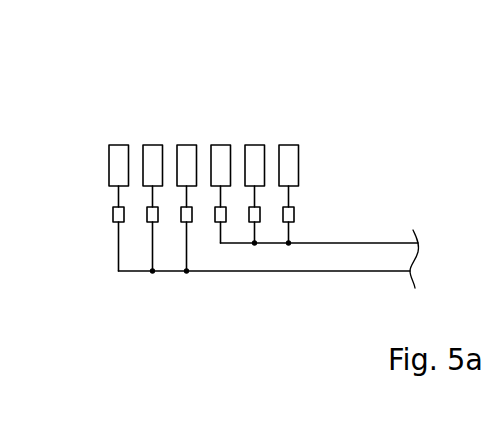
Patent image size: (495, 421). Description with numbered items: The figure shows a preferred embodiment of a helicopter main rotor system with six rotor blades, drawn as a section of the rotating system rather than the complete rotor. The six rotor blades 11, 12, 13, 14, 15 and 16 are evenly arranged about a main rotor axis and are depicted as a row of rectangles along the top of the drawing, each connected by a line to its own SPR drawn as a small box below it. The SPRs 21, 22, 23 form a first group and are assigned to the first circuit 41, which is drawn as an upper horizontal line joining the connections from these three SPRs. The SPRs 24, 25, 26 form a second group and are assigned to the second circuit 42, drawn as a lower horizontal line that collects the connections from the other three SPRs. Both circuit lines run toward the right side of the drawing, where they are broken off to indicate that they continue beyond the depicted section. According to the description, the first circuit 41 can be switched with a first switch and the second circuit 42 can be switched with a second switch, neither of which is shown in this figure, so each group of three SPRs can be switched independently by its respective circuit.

The rotor blade 11 is at (290, 144).
The rotor blade 12 is at (255, 144).
The rotor blade 13 is at (222, 144).
The rotor blade 14 is at (186, 144).
The rotor blade 15 is at (153, 144).
The rotor blade 16 is at (118, 144).
The SPR 21 is at (294, 215).
The SPR 22 is at (260, 217).
The SPR 23 is at (215, 213).
The SPR 24 is at (181, 213).
The SPR 25 is at (147, 213).
The SPR 26 is at (113, 213).
The first circuit 41 is at (380, 240).
The second circuit 42 is at (341, 274).